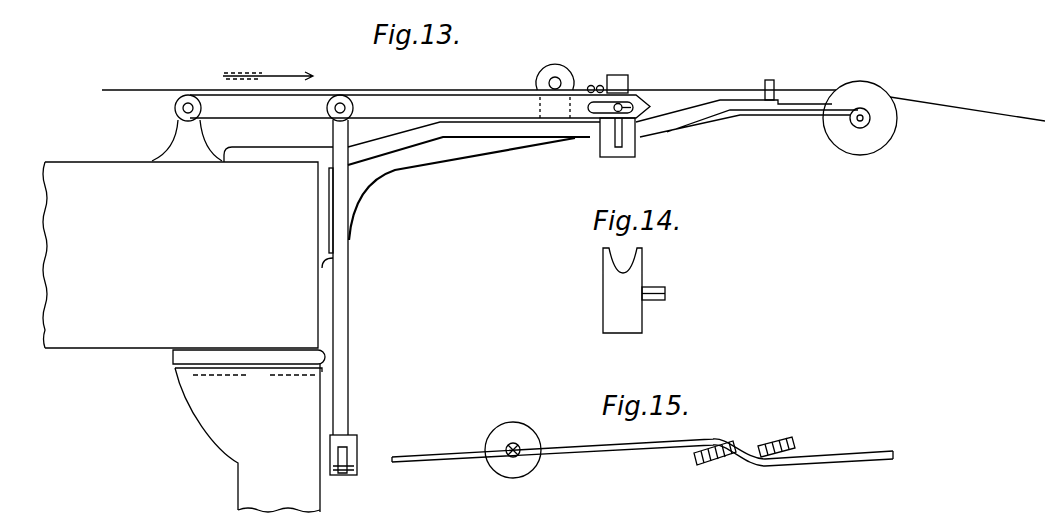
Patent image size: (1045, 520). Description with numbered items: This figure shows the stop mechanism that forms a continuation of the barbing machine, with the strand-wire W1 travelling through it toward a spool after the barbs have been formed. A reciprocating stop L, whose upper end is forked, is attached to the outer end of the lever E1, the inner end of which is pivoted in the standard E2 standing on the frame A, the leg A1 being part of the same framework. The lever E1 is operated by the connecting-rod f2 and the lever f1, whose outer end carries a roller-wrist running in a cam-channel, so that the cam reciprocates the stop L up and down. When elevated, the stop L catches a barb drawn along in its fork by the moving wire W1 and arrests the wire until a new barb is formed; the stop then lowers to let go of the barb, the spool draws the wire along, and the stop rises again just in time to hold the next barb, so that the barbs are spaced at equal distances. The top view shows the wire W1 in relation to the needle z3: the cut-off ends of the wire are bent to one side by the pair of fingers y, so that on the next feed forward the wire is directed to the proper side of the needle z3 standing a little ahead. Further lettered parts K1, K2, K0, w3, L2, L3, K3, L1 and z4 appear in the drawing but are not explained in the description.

In FIG. 13, the strand-wire W1 is at (573, 97).
In FIG. 15, the strand-wire W1 is at (642, 455).
In FIG. 13, the lever E1 is at (412, 108).
In FIG. 13, the standard E2 is at (242, 141).
In FIG. 13, the frame A is at (180, 255).
In FIG. 13, the leg A1 is at (249, 431).
In FIG. 13, the connecting-rod f2 is at (348, 395).
In FIG. 13, the lever f1 is at (343, 475).
In FIG. 13, the plate K' K1 is at (474, 181).
In FIG. 13, the roller K² K2 is at (563, 76).
In FIG. 13, the part k° K0 is at (568, 123).
In FIG. 13, the rollers w³ w3 is at (601, 86).
In FIG. 13, the reciprocating stop L is at (617, 84).
In FIG. 14, the reciprocating stop L is at (622, 290).
In FIG. 13, the pin L² L2 is at (651, 105).
In FIG. 14, the pin L² L2 is at (665, 293).
In FIG. 13, the bracket L³ L3 is at (618, 137).
In FIG. 13, the post K³ K3 is at (775, 83).
In FIG. 13, the pulley L' L1 is at (860, 118).
In FIG. 15, the roller z⁴ z4 is at (513, 450).
In FIG. 15, the needle z3 is at (520, 449).
In FIG. 15, the fingers y is at (716, 463).